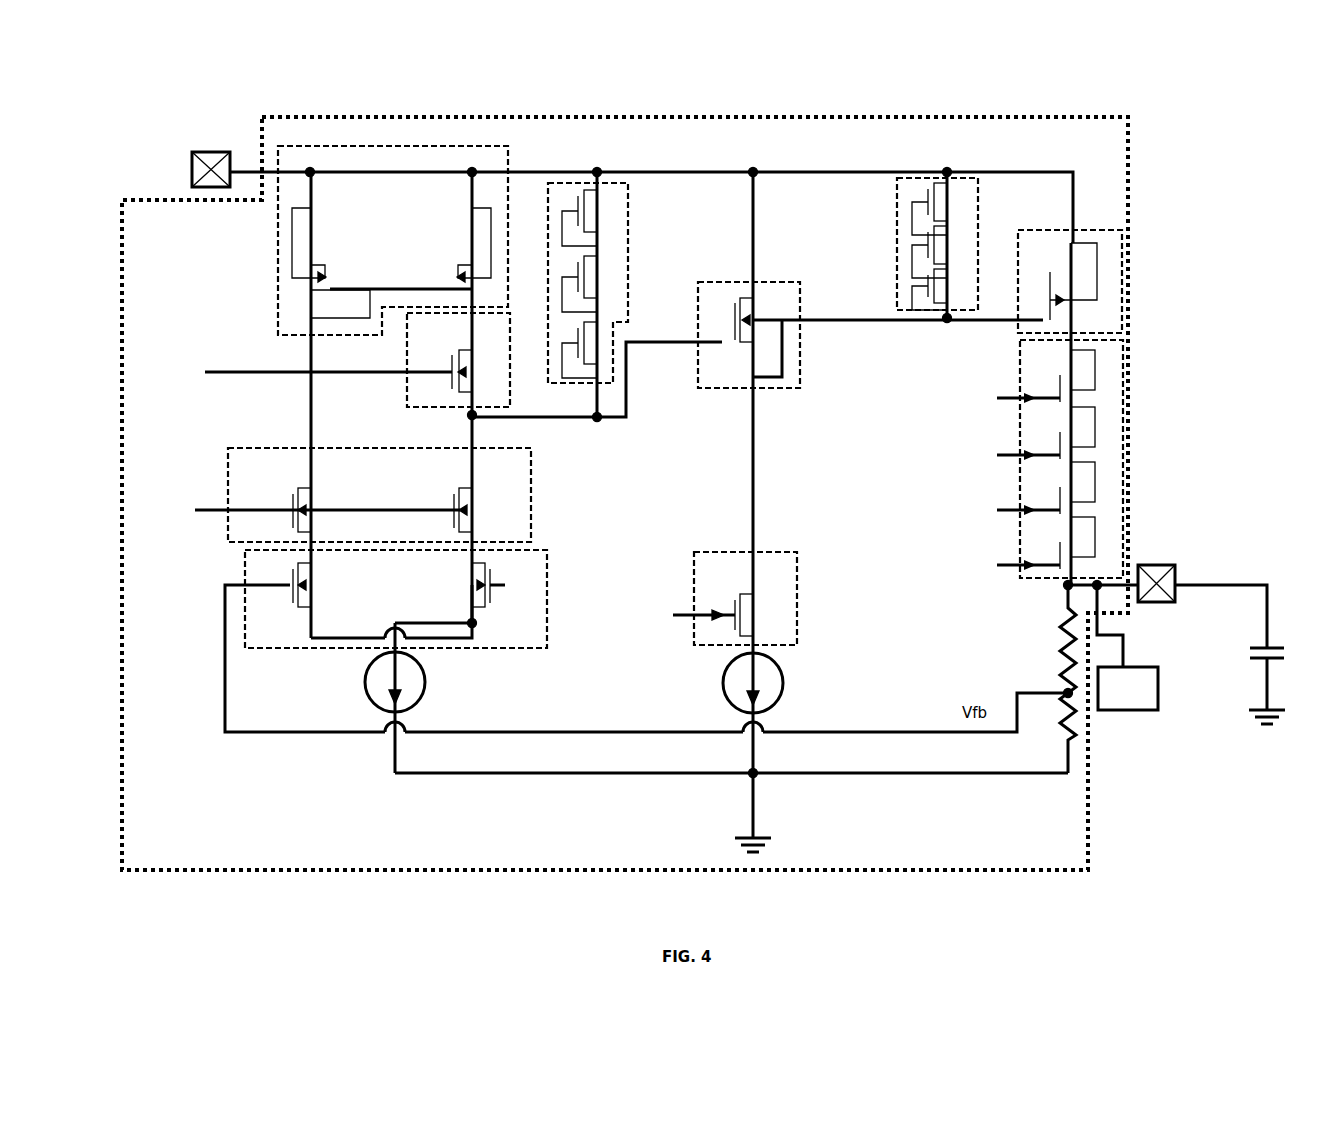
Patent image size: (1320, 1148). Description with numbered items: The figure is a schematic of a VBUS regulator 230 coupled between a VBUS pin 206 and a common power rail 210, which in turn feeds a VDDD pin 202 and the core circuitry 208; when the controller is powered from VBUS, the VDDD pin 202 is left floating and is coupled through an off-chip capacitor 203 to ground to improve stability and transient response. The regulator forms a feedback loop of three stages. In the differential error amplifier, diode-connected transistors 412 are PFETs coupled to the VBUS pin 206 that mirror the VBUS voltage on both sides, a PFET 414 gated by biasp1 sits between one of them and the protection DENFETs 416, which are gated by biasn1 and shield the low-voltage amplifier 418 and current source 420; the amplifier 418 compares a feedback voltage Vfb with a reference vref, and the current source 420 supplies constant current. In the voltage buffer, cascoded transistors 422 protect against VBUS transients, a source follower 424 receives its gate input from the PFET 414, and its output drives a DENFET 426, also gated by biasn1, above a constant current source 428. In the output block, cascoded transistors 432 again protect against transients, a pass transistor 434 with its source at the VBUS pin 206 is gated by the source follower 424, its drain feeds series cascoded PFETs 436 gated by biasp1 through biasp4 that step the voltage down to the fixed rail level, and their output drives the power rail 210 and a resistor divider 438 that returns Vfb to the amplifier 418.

The VDDD pin 202 is at (1165, 565).
The off-chip capacitor 203 is at (1246, 662).
The VBUS pin 206 is at (200, 152).
The core circuitry 208 is at (1128, 688).
The common power rail 210 is at (1125, 650).
The VBUS regulator 230 is at (384, 92).
The diode-connected transistors 412 is at (278, 257).
The PFET 414 is at (407, 393).
The protection DENFETs 416 is at (228, 458).
The amplifier 418 is at (245, 568).
The current source 420 is at (365, 680).
The cascoded transistors 422 is at (628, 197).
The source follower 424 is at (800, 370).
The DENFET 426 is at (694, 570).
The current source 428 is at (723, 680).
The cascoded transistors 432 is at (897, 214).
The pass transistor 434 is at (1050, 230).
The PFETs 436 is at (1020, 370).
The resistor divider 438 is at (1046, 662).